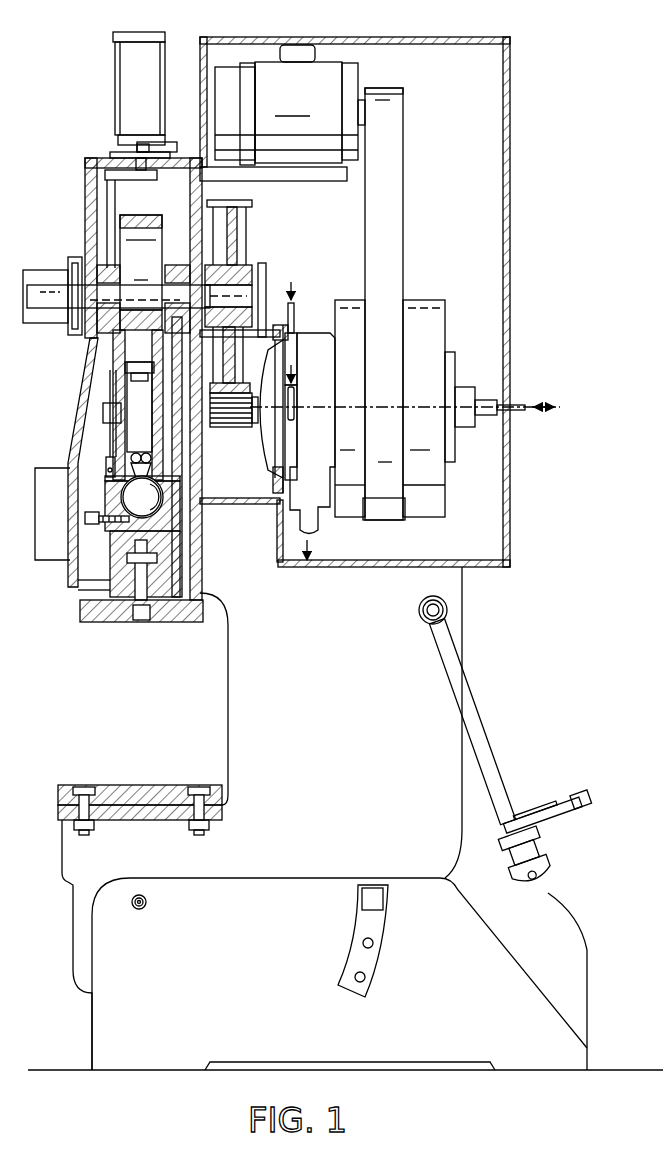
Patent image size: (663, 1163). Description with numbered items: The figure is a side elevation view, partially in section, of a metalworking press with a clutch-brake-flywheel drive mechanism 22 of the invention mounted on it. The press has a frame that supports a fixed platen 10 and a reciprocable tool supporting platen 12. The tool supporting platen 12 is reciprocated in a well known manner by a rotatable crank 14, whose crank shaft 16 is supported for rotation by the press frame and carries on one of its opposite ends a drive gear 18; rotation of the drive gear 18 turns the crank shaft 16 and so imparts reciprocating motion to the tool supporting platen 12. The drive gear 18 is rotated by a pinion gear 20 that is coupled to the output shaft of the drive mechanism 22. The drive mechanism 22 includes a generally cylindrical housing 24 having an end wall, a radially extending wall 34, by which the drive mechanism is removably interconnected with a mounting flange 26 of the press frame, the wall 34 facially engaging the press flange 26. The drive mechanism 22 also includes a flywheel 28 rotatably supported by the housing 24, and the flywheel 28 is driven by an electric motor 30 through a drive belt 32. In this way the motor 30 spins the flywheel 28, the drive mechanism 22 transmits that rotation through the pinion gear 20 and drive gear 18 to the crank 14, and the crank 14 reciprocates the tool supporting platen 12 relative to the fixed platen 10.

The fixed platen 10 is at (62, 798).
The tool supporting platen 12 is at (88, 610).
The rotatable crank 14 is at (130, 242).
The crank shaft 16 is at (60, 307).
The drive gear 18 is at (247, 237).
The pinion gear 20 is at (230, 417).
The clutch-brake-flywheel drive mechanism 22 is at (323, 287).
The housing 24 is at (302, 445).
The mounting flange 26 is at (277, 330).
The flywheel 28 is at (437, 323).
The electric motor 30 is at (325, 73).
The drive belt 32 is at (387, 230).
The radially extending wall 34 is at (292, 354).